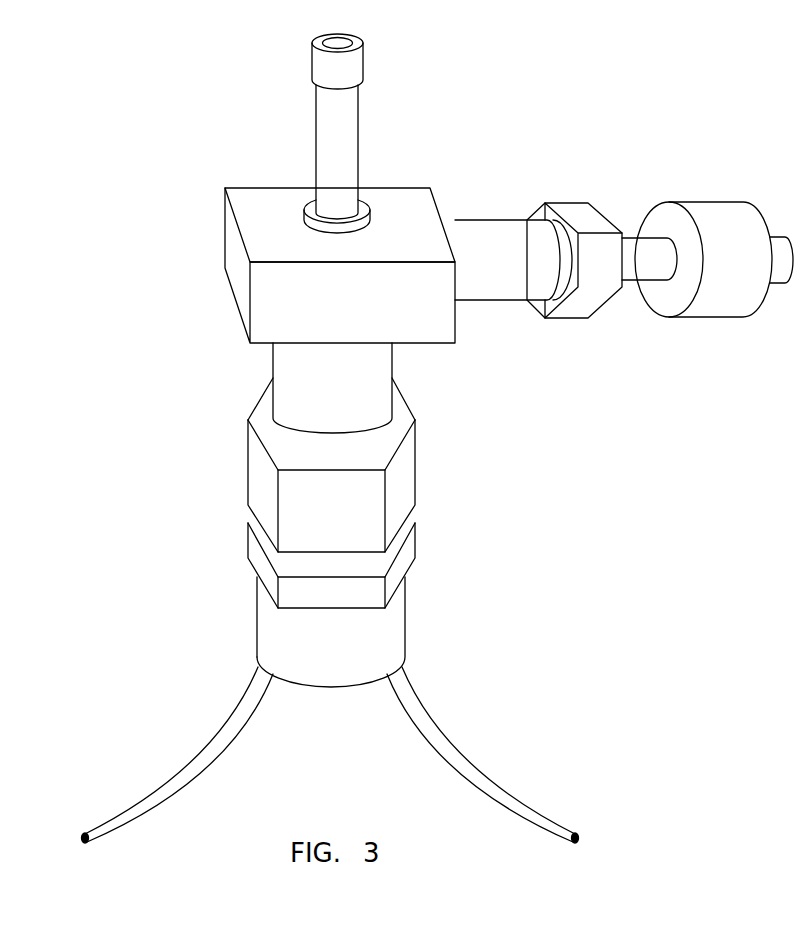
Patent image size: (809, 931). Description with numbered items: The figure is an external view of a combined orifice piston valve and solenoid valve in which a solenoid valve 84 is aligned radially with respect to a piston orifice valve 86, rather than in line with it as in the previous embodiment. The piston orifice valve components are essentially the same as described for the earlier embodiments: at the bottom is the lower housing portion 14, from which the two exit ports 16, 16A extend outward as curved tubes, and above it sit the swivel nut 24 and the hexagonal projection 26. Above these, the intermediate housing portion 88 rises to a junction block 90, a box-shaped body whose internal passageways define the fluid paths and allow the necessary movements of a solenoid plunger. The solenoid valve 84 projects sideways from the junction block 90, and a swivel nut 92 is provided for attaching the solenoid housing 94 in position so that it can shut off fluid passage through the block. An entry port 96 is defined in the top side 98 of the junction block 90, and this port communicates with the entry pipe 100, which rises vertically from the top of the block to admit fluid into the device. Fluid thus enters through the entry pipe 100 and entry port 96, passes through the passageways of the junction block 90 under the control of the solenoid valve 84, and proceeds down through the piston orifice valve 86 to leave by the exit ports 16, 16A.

The lower housing portion 14 is at (397, 638).
The exit port 16 is at (160, 800).
The exit port 16A is at (527, 805).
The swivel nut 24 is at (410, 475).
The hexagonal projection 26 is at (410, 548).
The solenoid valve 84 is at (495, 222).
The piston orifice valve 86 is at (270, 617).
The intermediate housing portion 88 is at (282, 380).
The junction block 90 is at (260, 307).
The swivel nut 92 is at (587, 305).
The solenoid housing 94 is at (722, 310).
The entry port 96 is at (367, 214).
The top side 98 is at (262, 202).
The entry pipe 100 is at (355, 110).